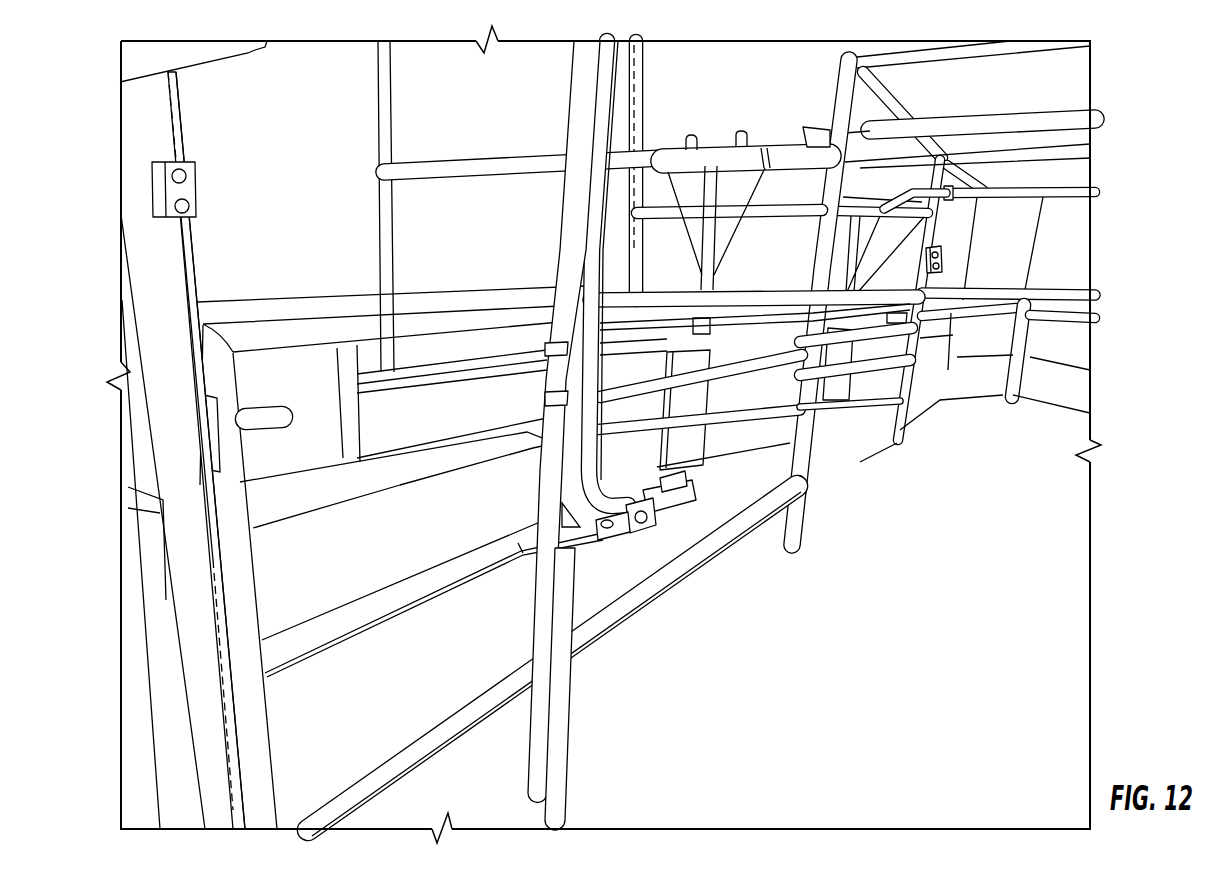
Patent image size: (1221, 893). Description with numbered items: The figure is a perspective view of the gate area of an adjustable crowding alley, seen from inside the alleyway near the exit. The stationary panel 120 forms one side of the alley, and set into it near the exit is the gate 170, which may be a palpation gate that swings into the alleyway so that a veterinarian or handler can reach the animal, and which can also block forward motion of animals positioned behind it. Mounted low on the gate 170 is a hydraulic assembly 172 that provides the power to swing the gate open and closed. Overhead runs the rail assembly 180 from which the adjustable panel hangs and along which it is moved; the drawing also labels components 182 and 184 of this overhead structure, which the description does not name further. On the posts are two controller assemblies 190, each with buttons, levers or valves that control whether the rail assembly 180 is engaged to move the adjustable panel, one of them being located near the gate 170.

The stationary panel 120 is at (832, 455).
The gate 170 is at (490, 705).
The hydraulic assembly 172 is at (670, 510).
The rail assembly 180 is at (713, 153).
The supply pipe 182 is at (910, 215).
The rail 184 is at (465, 160).
The controller assembly 190 is at (188, 160).